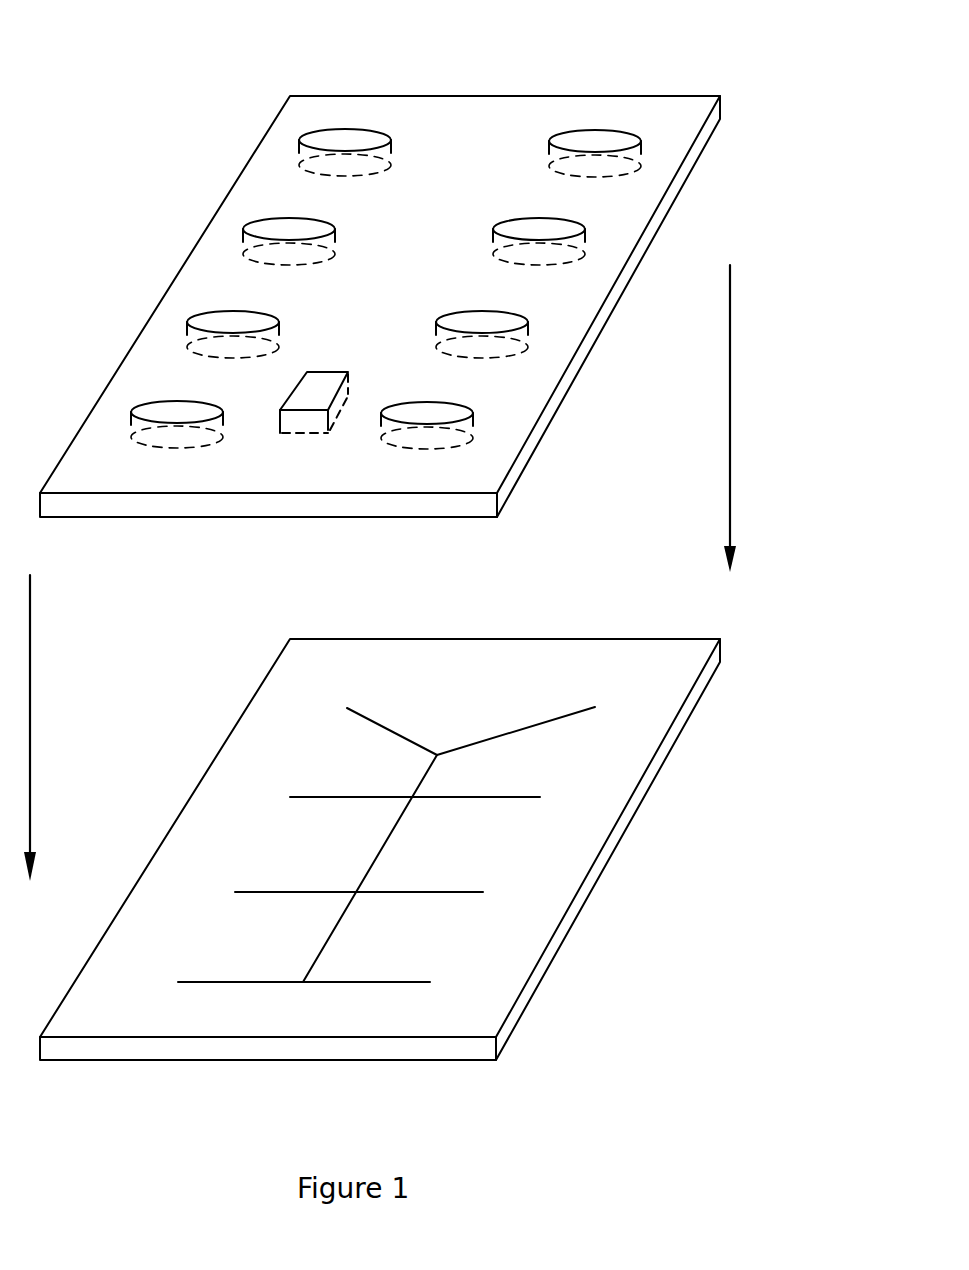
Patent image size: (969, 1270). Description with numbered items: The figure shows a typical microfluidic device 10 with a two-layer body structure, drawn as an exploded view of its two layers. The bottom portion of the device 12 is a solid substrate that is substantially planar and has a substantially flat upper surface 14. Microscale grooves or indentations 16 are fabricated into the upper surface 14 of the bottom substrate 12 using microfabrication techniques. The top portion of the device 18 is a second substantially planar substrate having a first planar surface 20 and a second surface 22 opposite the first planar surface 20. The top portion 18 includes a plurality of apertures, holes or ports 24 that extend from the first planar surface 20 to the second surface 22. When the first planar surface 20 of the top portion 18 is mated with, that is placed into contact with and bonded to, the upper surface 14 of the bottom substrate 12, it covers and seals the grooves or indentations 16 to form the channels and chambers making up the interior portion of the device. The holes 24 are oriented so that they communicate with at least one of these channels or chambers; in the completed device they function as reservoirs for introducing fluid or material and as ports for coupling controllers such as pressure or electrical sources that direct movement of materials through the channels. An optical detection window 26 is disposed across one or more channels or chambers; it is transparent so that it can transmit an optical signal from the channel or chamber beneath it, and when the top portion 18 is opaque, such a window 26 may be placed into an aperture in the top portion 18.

The microfluidic device 10 is at (203, 68).
The bottom portion of the device 12 is at (676, 727).
The upper surface 14 is at (405, 657).
The microscale grooves or indentations 16 is at (554, 720).
The top portion of the device 18 is at (685, 175).
The first planar surface 20 is at (445, 128).
The second surface 22 is at (570, 385).
The apertures, holes or ports 24 is at (620, 137).
The optical detection window 26 is at (305, 402).